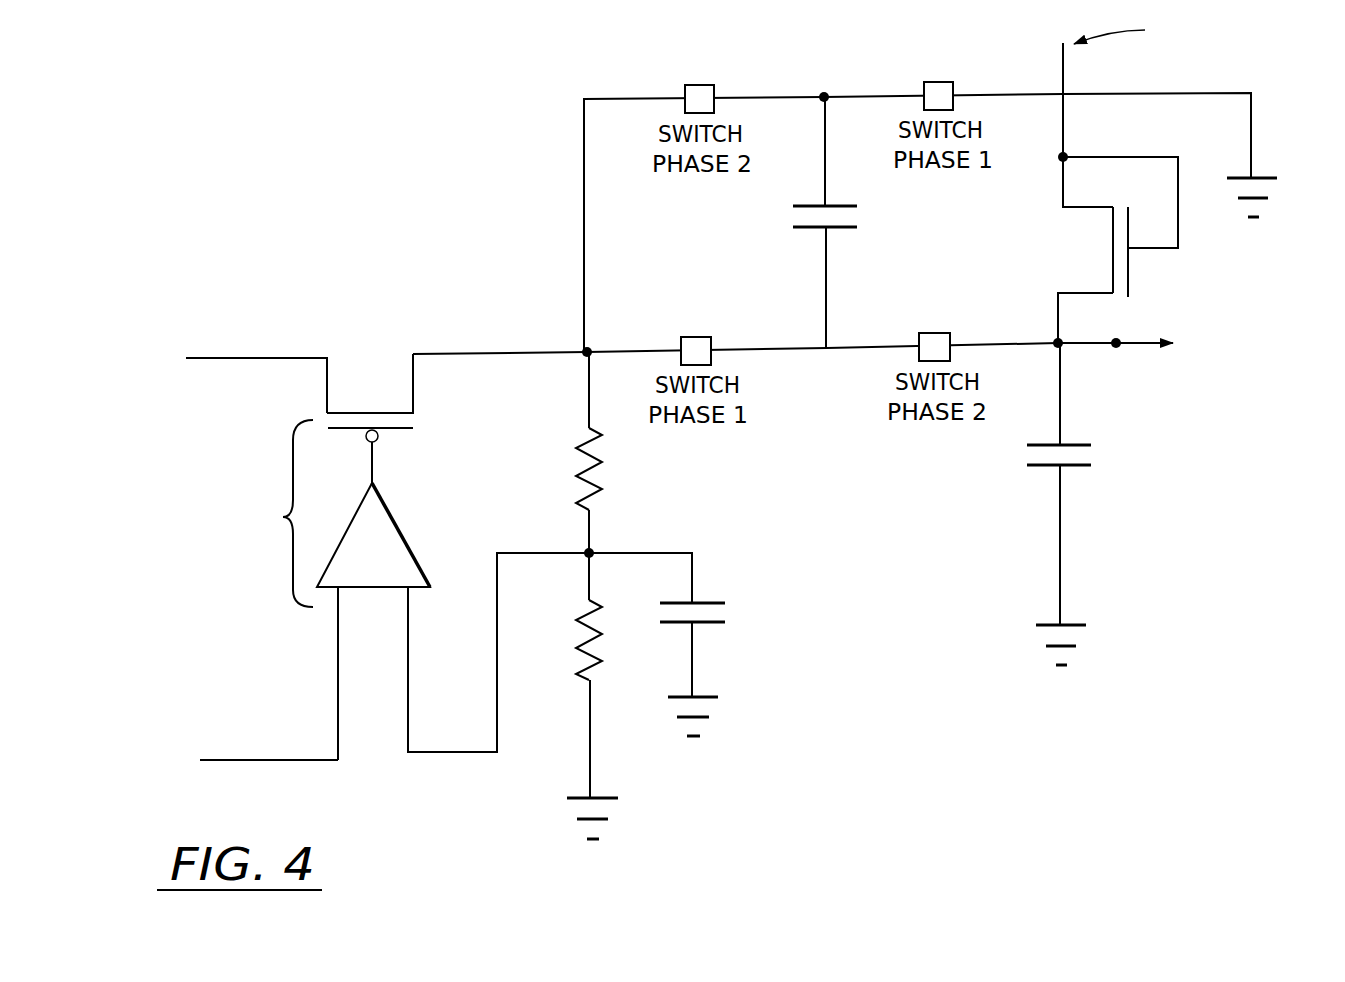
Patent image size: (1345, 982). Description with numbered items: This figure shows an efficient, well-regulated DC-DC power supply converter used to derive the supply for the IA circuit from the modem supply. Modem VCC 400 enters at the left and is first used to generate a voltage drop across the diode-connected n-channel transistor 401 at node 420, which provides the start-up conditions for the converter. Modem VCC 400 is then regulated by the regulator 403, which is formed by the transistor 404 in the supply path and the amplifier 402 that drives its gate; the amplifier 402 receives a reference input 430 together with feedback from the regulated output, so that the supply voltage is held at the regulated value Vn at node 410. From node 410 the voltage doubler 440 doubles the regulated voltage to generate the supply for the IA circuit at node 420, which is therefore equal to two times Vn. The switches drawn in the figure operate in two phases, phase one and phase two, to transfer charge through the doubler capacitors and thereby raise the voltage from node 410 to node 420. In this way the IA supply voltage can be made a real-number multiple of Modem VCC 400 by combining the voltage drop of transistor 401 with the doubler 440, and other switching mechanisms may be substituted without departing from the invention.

The Modem VCC 400 is at (157, 322).
The diode-connected n-channel transistor 401 is at (1106, 241).
The amplifier 402 is at (413, 532).
The regulator 403 is at (283, 517).
The transistor 404 is at (371, 348).
The node (Vn) 410 is at (562, 330).
The node 420 is at (1086, 361).
The reference voltage input VREF 430 is at (183, 735).
The voltage doubler 440 is at (833, 82).